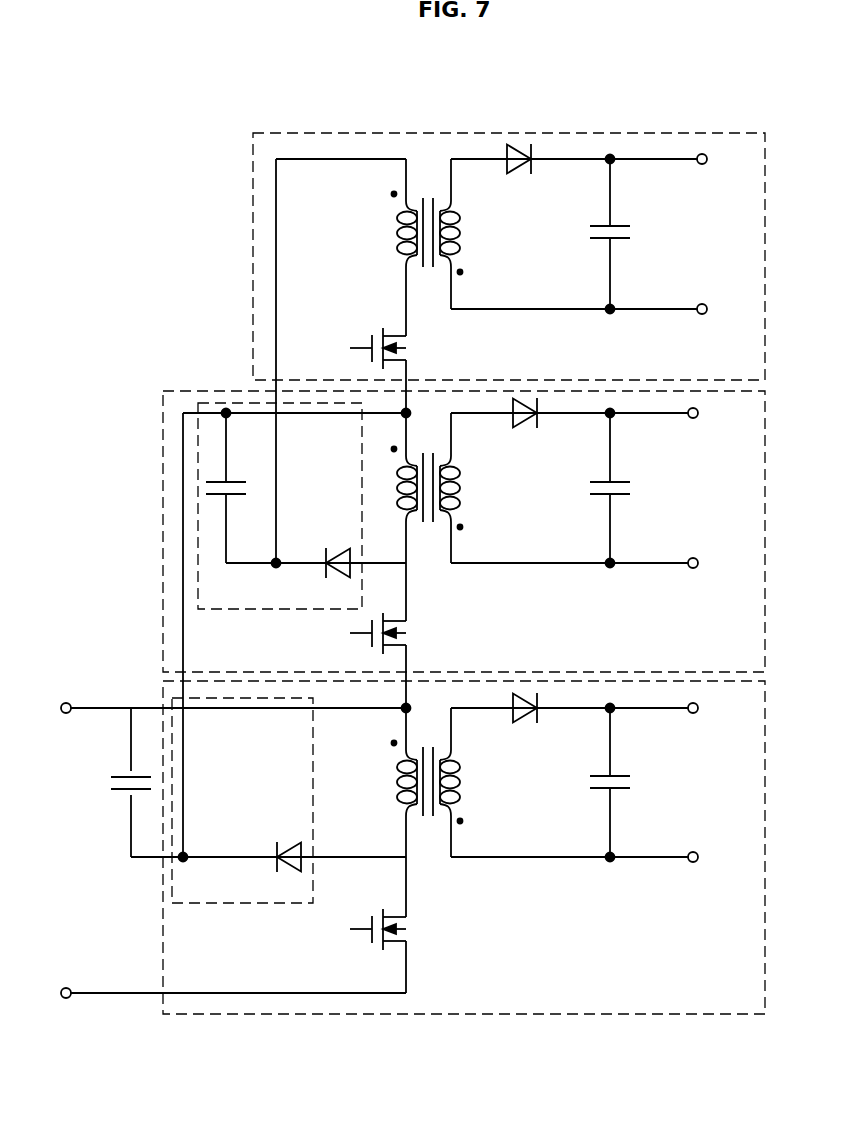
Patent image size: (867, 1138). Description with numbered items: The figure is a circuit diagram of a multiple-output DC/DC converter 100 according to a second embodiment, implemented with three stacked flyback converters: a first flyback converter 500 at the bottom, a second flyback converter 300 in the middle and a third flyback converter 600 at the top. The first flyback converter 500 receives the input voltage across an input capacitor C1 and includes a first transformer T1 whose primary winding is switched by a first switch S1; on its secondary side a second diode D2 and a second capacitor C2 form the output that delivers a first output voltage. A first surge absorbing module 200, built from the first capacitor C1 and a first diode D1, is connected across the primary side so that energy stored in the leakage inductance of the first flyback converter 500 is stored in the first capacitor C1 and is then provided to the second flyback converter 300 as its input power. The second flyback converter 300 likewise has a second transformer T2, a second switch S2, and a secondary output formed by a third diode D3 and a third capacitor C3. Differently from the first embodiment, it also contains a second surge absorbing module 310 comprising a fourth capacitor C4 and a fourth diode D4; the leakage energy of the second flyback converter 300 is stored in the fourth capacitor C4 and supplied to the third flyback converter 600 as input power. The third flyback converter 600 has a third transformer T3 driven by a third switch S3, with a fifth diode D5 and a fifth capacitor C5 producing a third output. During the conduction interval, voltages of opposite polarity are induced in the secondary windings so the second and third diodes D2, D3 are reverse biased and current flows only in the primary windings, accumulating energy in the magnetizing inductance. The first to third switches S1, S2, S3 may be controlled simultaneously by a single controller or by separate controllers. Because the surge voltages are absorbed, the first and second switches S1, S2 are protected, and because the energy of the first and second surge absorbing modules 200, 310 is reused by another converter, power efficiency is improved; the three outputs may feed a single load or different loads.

The multiple-output DC/DC converter 100 is at (152, 88).
The surge absorbing module 200 is at (240, 903).
The second flyback converter 300 is at (766, 542).
The second surge absorbing module 310 is at (198, 514).
The first flyback converter 500 is at (766, 857).
The third flyback converter 600 is at (766, 247).
The first capacitor C1 is at (118, 782).
The second capacitor C2 is at (624, 782).
The third capacitor C3 is at (624, 488).
The fourth capacitor C4 is at (233, 488).
The fifth capacitor C5 is at (624, 234).
The first diode D1 is at (288, 872).
The second diode D2 is at (526, 721).
The third diode D3 is at (526, 426).
The fourth diode D4 is at (337, 578).
The fifth diode D5 is at (519, 172).
The first switch S1 is at (394, 929).
The second switch S2 is at (394, 633).
The third switch S3 is at (394, 348).
The first transformer T1 is at (427, 795).
The second transformer T2 is at (427, 501).
The third transformer T3 is at (427, 244).